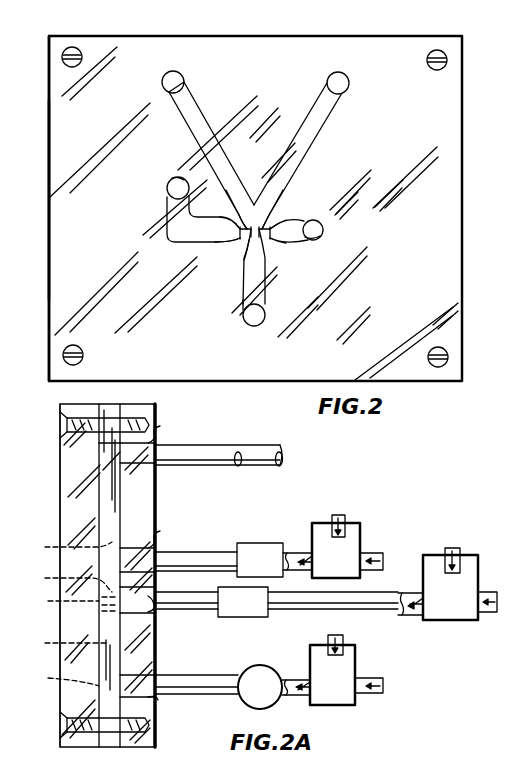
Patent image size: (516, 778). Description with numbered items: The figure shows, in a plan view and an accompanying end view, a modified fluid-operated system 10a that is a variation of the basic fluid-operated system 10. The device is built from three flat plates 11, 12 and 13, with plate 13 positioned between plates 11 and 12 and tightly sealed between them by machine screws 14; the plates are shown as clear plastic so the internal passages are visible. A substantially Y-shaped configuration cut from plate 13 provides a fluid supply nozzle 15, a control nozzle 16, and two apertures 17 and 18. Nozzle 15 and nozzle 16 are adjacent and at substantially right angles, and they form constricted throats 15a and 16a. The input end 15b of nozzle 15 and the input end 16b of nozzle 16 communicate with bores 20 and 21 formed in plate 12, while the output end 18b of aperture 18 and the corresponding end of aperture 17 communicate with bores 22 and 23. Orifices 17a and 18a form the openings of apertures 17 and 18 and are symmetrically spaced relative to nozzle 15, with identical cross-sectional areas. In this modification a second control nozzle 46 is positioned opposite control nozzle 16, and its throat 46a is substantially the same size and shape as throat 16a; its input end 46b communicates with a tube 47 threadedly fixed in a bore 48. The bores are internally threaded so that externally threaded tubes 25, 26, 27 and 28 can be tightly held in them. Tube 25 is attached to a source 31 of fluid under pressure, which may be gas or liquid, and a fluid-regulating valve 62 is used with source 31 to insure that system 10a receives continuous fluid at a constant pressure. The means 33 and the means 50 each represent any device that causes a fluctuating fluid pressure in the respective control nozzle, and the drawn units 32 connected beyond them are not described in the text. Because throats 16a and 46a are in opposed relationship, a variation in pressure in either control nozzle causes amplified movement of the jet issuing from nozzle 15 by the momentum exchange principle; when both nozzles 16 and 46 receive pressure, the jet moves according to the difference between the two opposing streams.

In FIG. 2A, the fluid-operated system 10 is at (82, 575).
In FIG. 2, the modified fluid-operated system 10a is at (46, 207).
In FIG. 2, the plate 11 is at (63, 253).
In FIG. 2A, the plate 11 is at (78, 487).
In FIG. 2A, the plate 12 is at (155, 507).
In FIG. 2A, the plate 13 is at (110, 517).
In FIG. 2, the machine screws 14 is at (447, 63).
In FIG. 2A, the machine screws 14 is at (62, 432).
In FIG. 2, the fluid supply nozzle 15 is at (261, 291).
In FIG. 2A, the fluid supply nozzle 15 is at (68, 644).
In FIG. 2, the constricted throat 15a is at (247, 266).
In FIG. 2, the input end 15b is at (252, 321).
In FIG. 2A, the input end 15b is at (61, 679).
In FIG. 2, the control nozzle 16 is at (303, 222).
In FIG. 2A, the control nozzle 16 is at (70, 582).
In FIG. 2, the constricted throat 16a is at (270, 239).
In FIG. 2A, the constricted throat 16a is at (71, 603).
In FIG. 2, the input end 16b is at (324, 230).
In FIG. 2, the aperture 17 is at (343, 88).
In FIG. 2, the orifice 17a is at (273, 204).
In FIG. 2, the aperture 18 is at (197, 130).
In FIG. 2A, the aperture 18 is at (70, 548).
In FIG. 2, the orifice 18a is at (234, 199).
In FIG. 2, the output end 18b is at (166, 88).
In FIG. 2, the bore 20 is at (257, 326).
In FIG. 2A, the bore 20 is at (158, 704).
In FIG. 2, the bore 21 is at (315, 240).
In FIG. 2A, the bore 21 is at (154, 616).
In FIG. 2, the bore 22 is at (340, 72).
In FIG. 2A, the bore 22 is at (162, 431).
In FIG. 2, the bore 23 is at (176, 71).
In FIG. 2A, the tube 25 is at (192, 681).
In FIG. 2A, the tube 26 is at (198, 603).
In FIG. 2A, the tube 27 is at (203, 455).
In FIG. 2A, the tube 28 is at (260, 455).
In FIG. 2A, the source of fluid under pressure 31 is at (340, 688).
In FIG. 2A, the valve 32 is at (344, 565).
In FIG. 2A, the means causing fluctuating fluid pressure 33 is at (251, 609).
In FIG. 2, the second control nozzle 46 is at (193, 230).
In FIG. 2, the throat 46a is at (238, 237).
In FIG. 2, the input end 46b is at (176, 190).
In FIG. 2A, the tube 47 is at (213, 552).
In FIG. 2, the bore 48 is at (176, 178).
In FIG. 2A, the bore 48 is at (167, 536).
In FIG. 2A, the means causing fluctuating fluid pressure 50 is at (260, 560).
In FIG. 2A, the fluid-regulating valve 62 is at (262, 666).